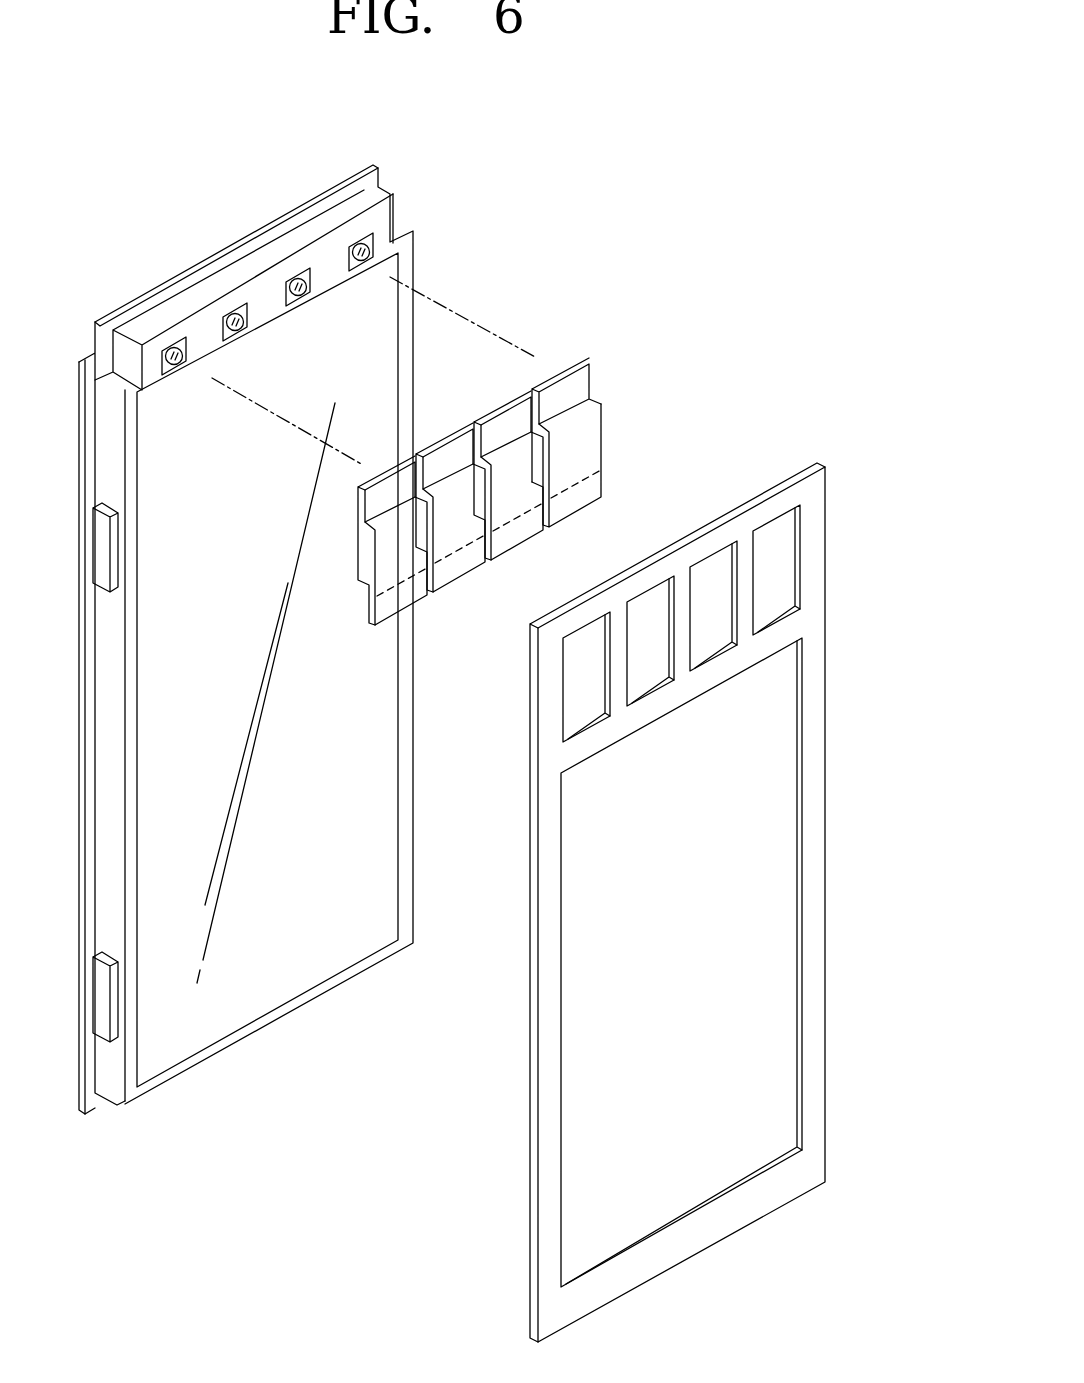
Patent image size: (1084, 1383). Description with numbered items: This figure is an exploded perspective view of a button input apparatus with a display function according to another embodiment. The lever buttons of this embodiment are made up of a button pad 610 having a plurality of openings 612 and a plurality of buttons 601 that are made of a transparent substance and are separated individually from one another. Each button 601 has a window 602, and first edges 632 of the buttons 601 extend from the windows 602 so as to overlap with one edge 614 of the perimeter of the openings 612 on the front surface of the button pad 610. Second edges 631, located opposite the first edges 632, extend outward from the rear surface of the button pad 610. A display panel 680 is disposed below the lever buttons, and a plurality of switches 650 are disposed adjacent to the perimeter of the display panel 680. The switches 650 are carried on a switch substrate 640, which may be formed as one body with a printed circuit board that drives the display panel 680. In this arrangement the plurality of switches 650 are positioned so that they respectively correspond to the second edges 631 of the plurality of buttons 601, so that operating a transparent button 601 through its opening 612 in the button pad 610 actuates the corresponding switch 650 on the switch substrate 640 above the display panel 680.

The switch substrate 640 is at (413, 229).
The switches 650 is at (188, 343).
The display panel 680 is at (377, 412).
The buttons 601 is at (452, 440).
The second edges 631 is at (585, 380).
The windows 602 is at (598, 443).
The first edges 632 is at (583, 500).
The button pad 610 is at (726, 863).
The openings 612 is at (782, 575).
The edge of the perimeter of the openings 614 is at (777, 632).